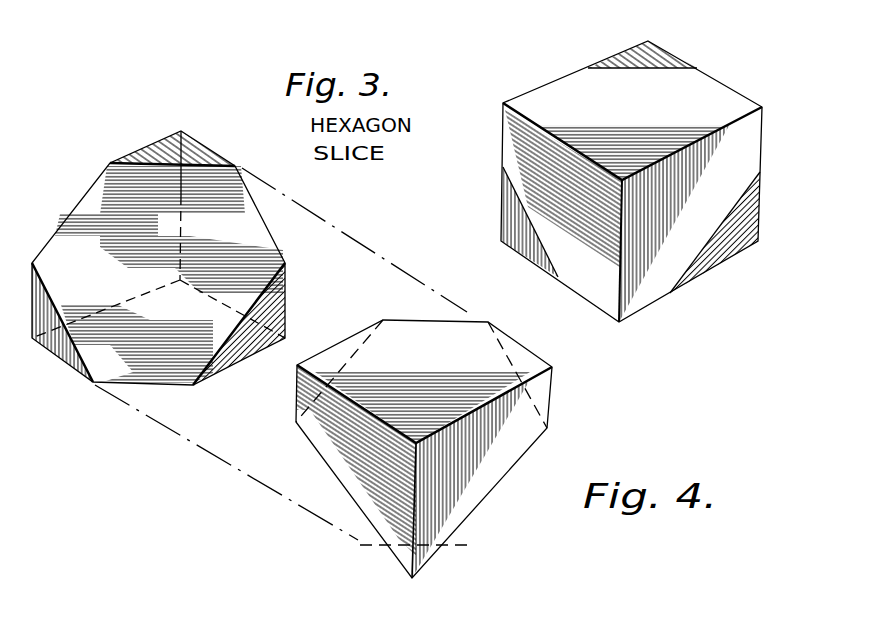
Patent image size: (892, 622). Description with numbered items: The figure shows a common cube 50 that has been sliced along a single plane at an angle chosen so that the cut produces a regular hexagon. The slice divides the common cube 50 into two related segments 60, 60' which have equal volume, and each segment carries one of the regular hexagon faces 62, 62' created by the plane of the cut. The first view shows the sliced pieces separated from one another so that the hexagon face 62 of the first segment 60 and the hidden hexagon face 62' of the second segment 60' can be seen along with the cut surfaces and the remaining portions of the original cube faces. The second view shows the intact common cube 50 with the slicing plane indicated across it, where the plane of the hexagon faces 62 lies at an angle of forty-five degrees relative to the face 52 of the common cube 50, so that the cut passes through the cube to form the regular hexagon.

In FIG. 4, the common cube 50 is at (652, 174).
In FIG. 4, the face 52 is at (560, 92).
In FIG. 3, the segment 60 is at (172, 129).
In FIG. 4, the segment 60 is at (665, 35).
In FIG. 3, the segment 60' is at (478, 479).
In FIG. 4, the segment 60' is at (703, 259).
In FIG. 3, the regular hexagon face 62 is at (191, 274).
In FIG. 3, the regular hexagon face 62' is at (407, 442).